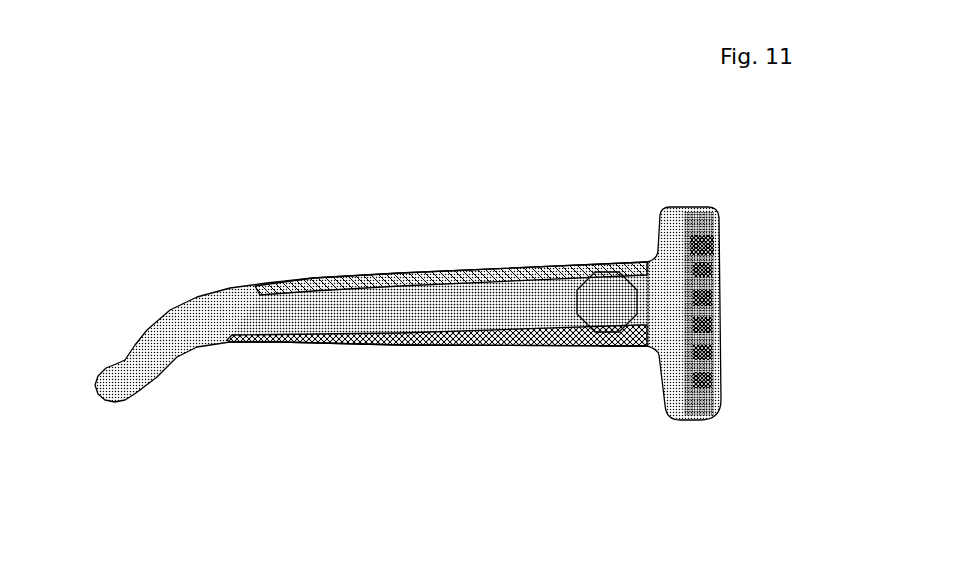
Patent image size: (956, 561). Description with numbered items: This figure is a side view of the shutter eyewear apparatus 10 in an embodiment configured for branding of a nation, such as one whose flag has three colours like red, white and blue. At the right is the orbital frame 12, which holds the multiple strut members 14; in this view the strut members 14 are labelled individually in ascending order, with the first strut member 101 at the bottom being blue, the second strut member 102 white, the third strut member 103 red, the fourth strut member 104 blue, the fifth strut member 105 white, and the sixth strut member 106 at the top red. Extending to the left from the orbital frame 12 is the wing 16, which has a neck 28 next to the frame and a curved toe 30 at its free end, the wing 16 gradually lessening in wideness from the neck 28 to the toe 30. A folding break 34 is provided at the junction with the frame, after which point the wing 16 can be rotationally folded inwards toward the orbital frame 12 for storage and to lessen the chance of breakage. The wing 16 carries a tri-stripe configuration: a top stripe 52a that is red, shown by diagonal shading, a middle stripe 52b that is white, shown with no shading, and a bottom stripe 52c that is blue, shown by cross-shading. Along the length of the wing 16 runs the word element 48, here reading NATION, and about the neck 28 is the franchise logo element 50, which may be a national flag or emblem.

The shutter eyewear apparatus 10 is at (125, 112).
The orbital frame 12 is at (650, 217).
The strut members 14 is at (783, 215).
The wing 16 is at (342, 262).
The neck 28 is at (625, 360).
The curved toe 30 is at (187, 385).
The folding break 34 is at (653, 343).
The word element 48 is at (427, 323).
The franchise logo element 50 is at (577, 320).
The first stripe 52a is at (477, 272).
The second stripe 52b is at (293, 317).
The third stripe 52c is at (480, 341).
The first strut member 101 is at (710, 377).
The second strut member 102 is at (710, 352).
The third strut member 103 is at (710, 325).
The fourth strut member 104 is at (708, 298).
The fifth strut member 105 is at (708, 272).
The sixth strut member 106 is at (710, 243).